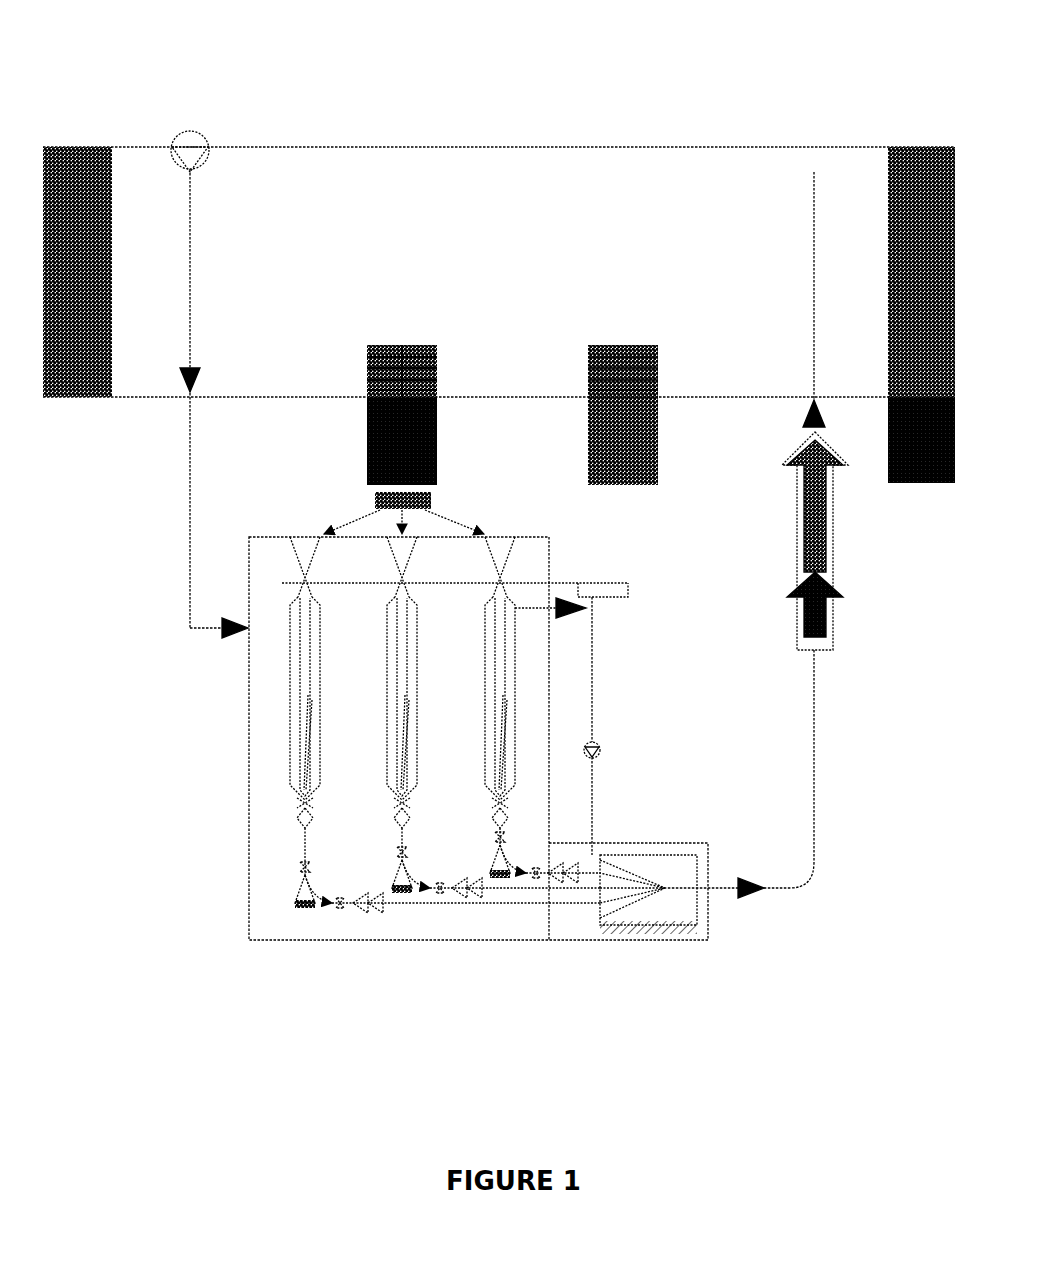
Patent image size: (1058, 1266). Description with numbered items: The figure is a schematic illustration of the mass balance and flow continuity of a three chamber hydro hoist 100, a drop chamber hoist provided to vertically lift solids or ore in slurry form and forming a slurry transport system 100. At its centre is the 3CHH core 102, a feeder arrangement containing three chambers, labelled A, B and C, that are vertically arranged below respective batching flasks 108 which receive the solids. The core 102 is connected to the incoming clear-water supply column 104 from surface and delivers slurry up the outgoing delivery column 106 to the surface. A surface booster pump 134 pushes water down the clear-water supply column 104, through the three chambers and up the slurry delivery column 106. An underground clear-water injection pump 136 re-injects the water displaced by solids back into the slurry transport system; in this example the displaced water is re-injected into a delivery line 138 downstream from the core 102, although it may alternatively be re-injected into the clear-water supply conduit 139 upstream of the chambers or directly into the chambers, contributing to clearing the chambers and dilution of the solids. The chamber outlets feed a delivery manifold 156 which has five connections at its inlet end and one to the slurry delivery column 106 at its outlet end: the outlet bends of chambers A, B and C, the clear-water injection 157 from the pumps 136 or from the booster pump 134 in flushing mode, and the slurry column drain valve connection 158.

The 3 chamber hydro hoist 100 is at (615, 92).
The 3CHH core 102 is at (244, 852).
The clear-water supply column 104 is at (194, 268).
The delivery column 106 is at (813, 262).
The batching flasks 108 is at (513, 557).
The surface booster pump 134 is at (201, 137).
The clear-water injection pump 136 is at (603, 748).
The delivery line 138 is at (724, 890).
The clear-water supply conduit 139 is at (210, 629).
The delivery manifold 156 is at (672, 912).
The clear-water injection 157 is at (641, 873).
The slurry column drain valve connection 158 is at (631, 908).